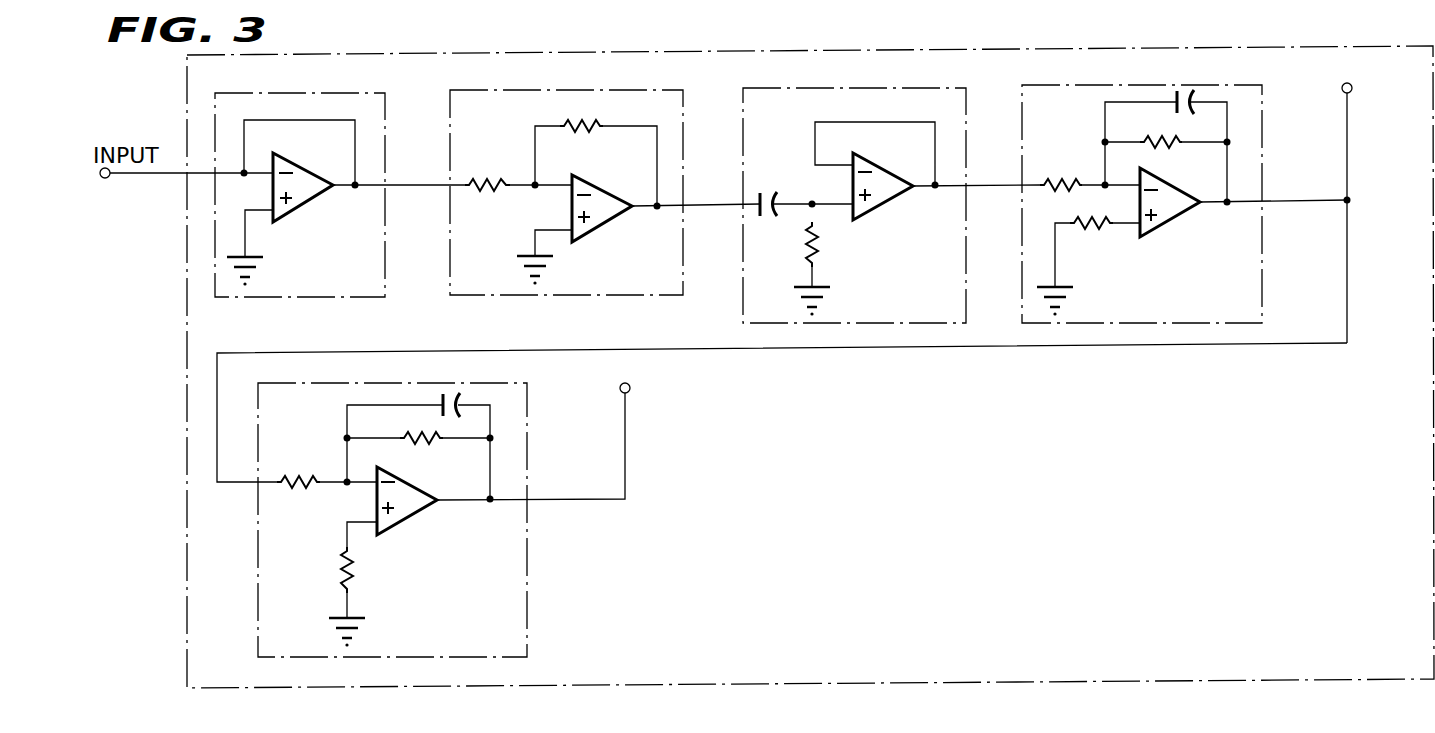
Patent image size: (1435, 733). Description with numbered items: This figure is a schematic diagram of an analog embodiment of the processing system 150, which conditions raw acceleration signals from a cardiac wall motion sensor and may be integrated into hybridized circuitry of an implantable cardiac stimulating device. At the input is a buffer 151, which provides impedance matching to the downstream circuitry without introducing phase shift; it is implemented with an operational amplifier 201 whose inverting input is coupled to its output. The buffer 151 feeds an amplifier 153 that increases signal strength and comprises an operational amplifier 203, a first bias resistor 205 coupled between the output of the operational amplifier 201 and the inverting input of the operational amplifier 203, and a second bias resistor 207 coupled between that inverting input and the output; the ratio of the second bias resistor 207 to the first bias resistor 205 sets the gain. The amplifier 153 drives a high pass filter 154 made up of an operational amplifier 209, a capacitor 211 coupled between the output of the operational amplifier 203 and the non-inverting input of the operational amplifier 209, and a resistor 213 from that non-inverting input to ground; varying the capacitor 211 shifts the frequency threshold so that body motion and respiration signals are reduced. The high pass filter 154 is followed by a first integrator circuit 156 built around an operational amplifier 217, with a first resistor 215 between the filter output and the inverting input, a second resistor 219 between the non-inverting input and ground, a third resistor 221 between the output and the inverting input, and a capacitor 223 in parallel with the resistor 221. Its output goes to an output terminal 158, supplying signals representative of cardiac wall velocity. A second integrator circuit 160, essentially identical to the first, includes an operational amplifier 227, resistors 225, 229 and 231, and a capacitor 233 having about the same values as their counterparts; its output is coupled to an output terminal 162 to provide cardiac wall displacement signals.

The processing system 150 is at (1302, 47).
The buffer 151 is at (343, 93).
The amplifier 153 is at (647, 90).
The high pass filter 154 is at (913, 88).
The first integrator circuit 156 is at (1207, 85).
The output terminal 158 is at (1352, 88).
The second integrator circuit 160 is at (480, 383).
The output terminal 162 is at (630, 386).
The operational amplifier 201 is at (300, 163).
The operational amplifier 203 is at (590, 177).
The first bias resistor 205 is at (472, 178).
The second bias resistor 207 is at (602, 124).
The operational amplifier 209 is at (903, 153).
The capacitor 211 is at (776, 197).
The resistor 213 is at (818, 247).
The first resistor 215 is at (1047, 178).
The operational amplifier 217 is at (1167, 222).
The second resistor 219 is at (1087, 233).
The third resistor 221 is at (1167, 150).
The capacitor 223 is at (1178, 110).
The resistor 225 is at (297, 478).
The operational amplifier 227 is at (407, 520).
The resistor 229 is at (340, 567).
The resistor 231 is at (430, 447).
The capacitor 233 is at (440, 407).